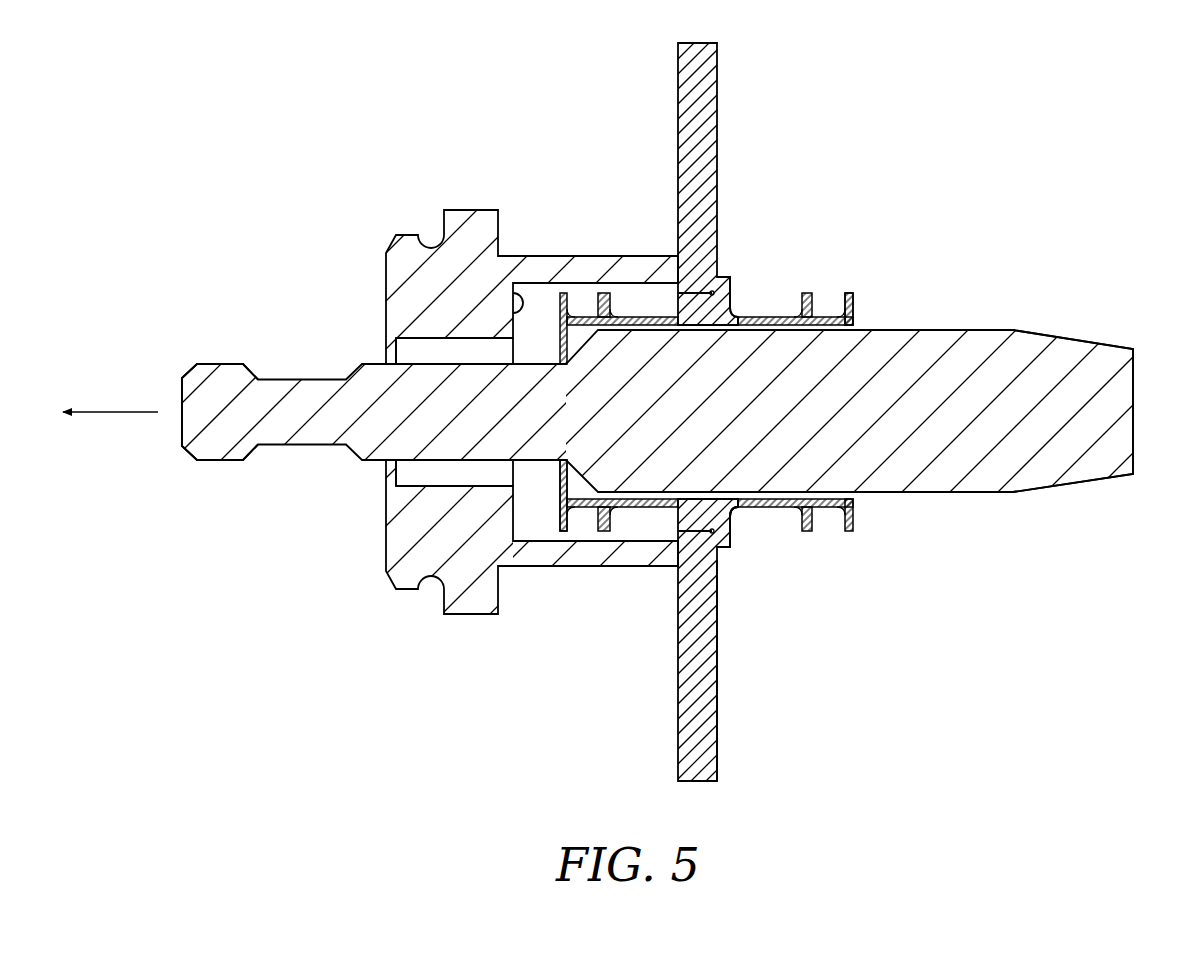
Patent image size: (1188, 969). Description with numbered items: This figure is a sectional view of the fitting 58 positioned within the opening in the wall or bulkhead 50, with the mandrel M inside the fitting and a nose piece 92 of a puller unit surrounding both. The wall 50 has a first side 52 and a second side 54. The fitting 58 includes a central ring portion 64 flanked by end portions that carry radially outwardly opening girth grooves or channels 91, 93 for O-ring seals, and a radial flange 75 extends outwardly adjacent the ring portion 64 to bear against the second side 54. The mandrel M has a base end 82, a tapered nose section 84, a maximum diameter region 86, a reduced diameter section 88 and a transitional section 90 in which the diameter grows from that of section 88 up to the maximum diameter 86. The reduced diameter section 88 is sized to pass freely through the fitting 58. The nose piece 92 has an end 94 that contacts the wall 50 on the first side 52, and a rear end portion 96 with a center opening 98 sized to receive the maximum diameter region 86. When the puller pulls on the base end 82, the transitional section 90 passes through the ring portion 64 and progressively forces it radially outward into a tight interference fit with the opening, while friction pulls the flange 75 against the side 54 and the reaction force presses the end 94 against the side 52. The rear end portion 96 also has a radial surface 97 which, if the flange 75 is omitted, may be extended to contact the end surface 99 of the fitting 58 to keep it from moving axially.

The wall or bulkhead 50 is at (698, 102).
The first side 52 is at (678, 708).
The second side 54 is at (718, 747).
The fitting 58 is at (762, 287).
The ring portion 64 is at (707, 513).
The radial flange 75 is at (732, 530).
The base end 82 is at (378, 437).
The tapered nose section 84 is at (1085, 488).
The maximum diameter region 86 is at (1020, 330).
The reduced diameter section 88 is at (772, 325).
The transitional section 90 is at (945, 523).
The girth groove or channel 91 is at (583, 303).
The nose piece 92 is at (535, 552).
The girth groove or channel 93 is at (835, 298).
The end 94 is at (686, 265).
The rear end portion 96 is at (413, 548).
The radial surface 97 is at (442, 352).
The center opening 98 is at (512, 284).
The end surface 99 is at (570, 516).
The mandrel M is at (908, 375).